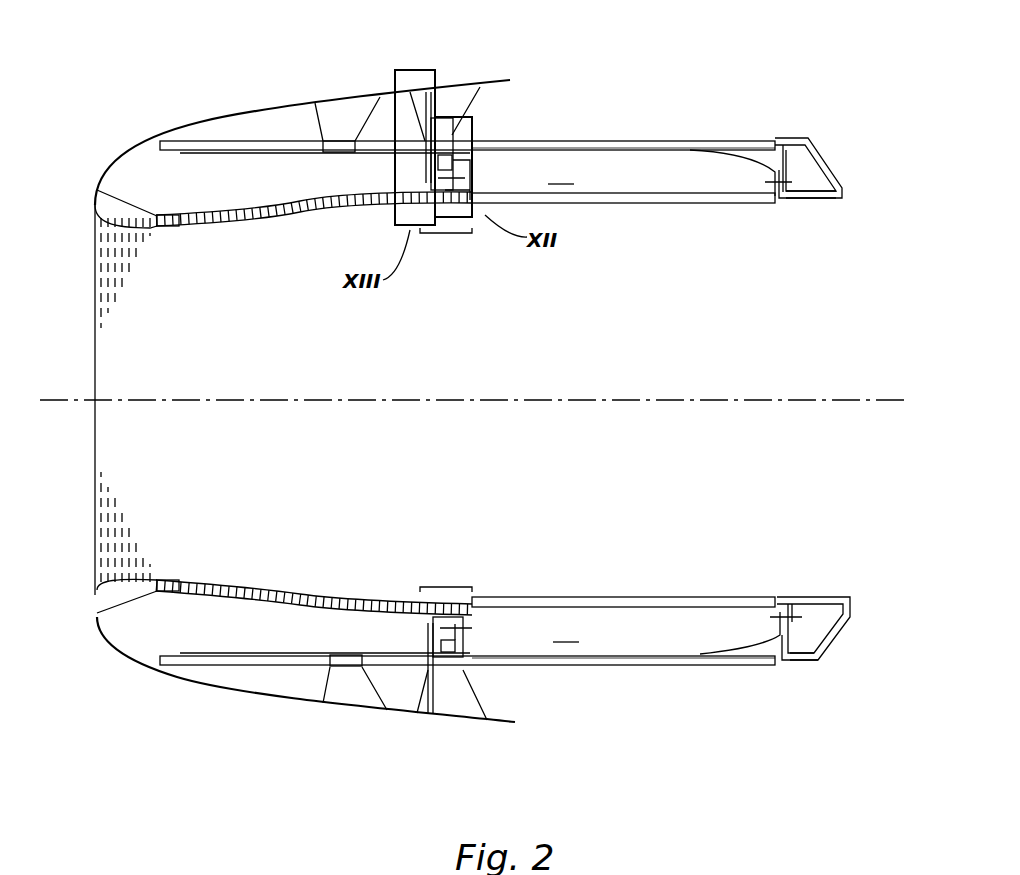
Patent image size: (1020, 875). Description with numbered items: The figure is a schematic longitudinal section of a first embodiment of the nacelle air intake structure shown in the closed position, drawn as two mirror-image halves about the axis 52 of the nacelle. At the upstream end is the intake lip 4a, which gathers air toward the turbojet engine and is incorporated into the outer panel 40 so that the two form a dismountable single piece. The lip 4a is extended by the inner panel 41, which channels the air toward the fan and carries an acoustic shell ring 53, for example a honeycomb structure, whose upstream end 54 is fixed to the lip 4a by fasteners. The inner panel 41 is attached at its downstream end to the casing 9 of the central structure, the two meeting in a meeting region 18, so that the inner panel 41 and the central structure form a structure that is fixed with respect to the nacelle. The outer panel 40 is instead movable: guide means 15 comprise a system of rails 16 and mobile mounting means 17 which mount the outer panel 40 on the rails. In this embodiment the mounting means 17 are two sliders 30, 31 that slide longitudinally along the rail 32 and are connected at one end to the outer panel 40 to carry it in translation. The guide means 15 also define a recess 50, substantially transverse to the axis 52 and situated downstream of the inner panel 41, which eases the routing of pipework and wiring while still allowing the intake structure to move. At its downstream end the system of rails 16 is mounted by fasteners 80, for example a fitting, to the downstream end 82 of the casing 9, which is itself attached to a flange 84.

The intake lip 4a is at (97, 190).
The casing 9 is at (665, 200).
The guide means 15 is at (760, 138).
The system of rails 16 is at (658, 143).
The mounting means 17 is at (345, 128).
The meeting region 18 is at (445, 233).
The slider 30 is at (458, 103).
The slider 31 is at (325, 100).
The rail 32 is at (566, 143).
The outer panel 40 is at (182, 121).
The inner panel 41 is at (205, 212).
The recess 50 is at (563, 402).
The axis 52 is at (747, 398).
The acoustic shell ring 53 is at (287, 220).
The upstream end 54 is at (180, 224).
The fasteners 80 is at (818, 156).
The downstream end 82 is at (777, 203).
The flange 84 is at (828, 207).